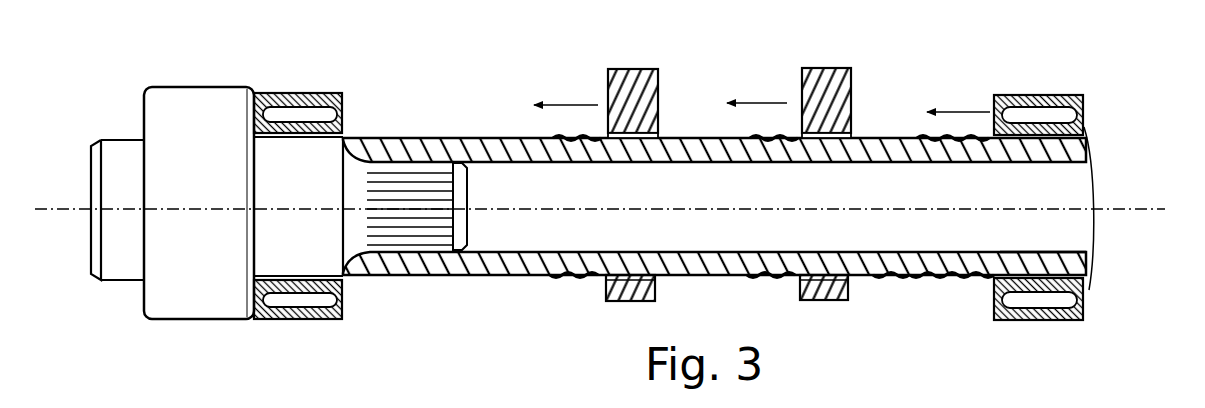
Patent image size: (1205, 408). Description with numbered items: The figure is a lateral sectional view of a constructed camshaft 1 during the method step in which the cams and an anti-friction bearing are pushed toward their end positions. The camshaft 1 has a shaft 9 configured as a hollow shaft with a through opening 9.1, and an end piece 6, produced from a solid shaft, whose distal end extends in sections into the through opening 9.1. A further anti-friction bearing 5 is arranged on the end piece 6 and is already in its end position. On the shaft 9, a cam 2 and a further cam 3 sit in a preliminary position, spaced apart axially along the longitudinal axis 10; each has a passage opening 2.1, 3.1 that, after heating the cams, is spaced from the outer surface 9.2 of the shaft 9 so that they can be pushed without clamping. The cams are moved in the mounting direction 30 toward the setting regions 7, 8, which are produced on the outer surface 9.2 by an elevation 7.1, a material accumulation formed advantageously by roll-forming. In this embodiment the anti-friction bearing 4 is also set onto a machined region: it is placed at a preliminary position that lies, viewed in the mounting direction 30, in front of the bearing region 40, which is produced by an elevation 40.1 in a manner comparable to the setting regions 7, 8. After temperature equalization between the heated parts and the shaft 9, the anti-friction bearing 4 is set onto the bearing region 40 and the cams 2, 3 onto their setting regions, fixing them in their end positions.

The constructed camshaft 1 is at (471, 78).
The cam 2 is at (816, 68).
The passage opening 2.1 is at (824, 146).
The further cam 3 is at (627, 68).
The passage opening 3.1 is at (628, 145).
The anti-friction bearing 4 is at (1045, 95).
The further anti-friction bearing 5 is at (295, 92).
The end piece 6 is at (212, 108).
The setting region 7 is at (797, 289).
The elevation 7.1 is at (750, 282).
The setting region 8 is at (600, 286).
The shaft 9 is at (418, 279).
The through opening 9.1 is at (1078, 233).
The outer surface 9.2 is at (462, 278).
The longitudinal axis 10 is at (1128, 207).
The mounting direction 30 is at (567, 100).
The bearing region 40 is at (980, 294).
The elevation 40.1 is at (918, 284).